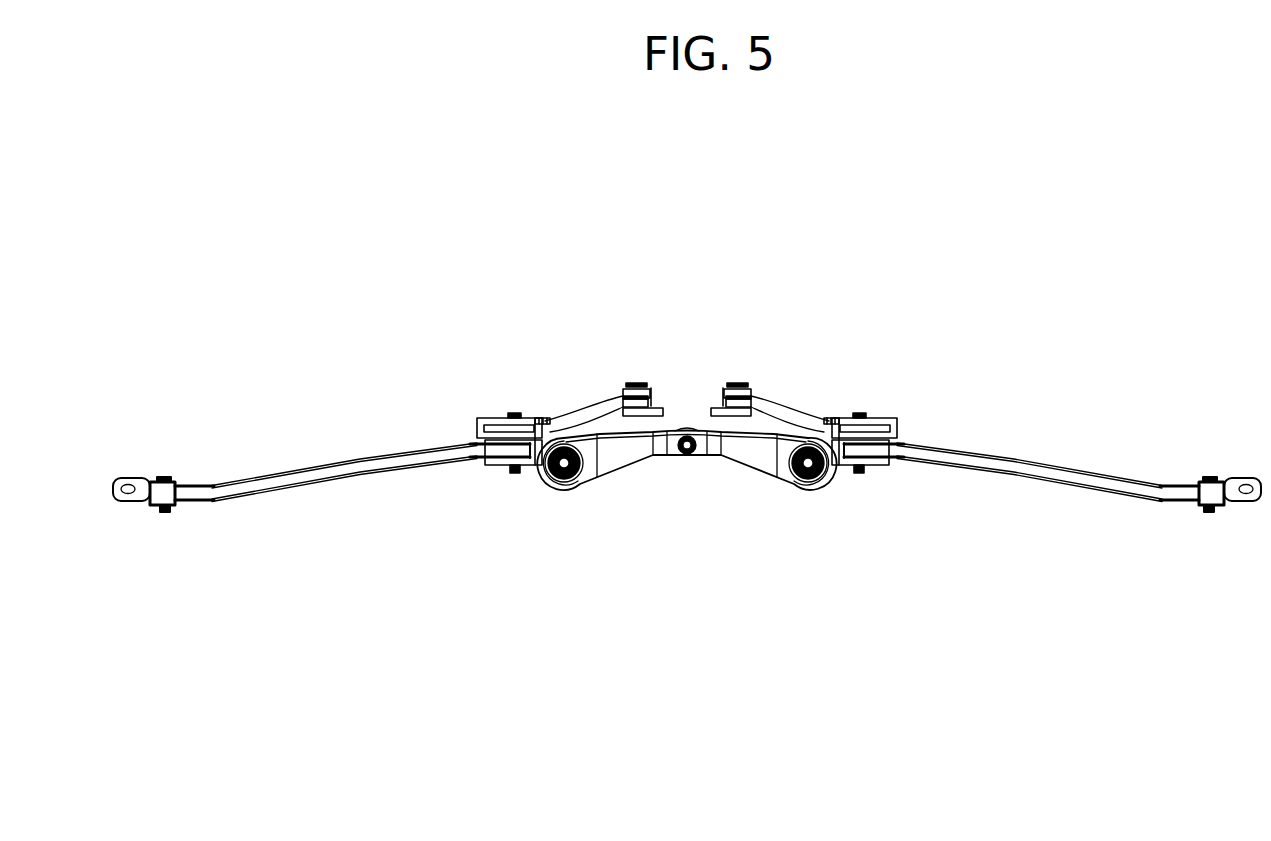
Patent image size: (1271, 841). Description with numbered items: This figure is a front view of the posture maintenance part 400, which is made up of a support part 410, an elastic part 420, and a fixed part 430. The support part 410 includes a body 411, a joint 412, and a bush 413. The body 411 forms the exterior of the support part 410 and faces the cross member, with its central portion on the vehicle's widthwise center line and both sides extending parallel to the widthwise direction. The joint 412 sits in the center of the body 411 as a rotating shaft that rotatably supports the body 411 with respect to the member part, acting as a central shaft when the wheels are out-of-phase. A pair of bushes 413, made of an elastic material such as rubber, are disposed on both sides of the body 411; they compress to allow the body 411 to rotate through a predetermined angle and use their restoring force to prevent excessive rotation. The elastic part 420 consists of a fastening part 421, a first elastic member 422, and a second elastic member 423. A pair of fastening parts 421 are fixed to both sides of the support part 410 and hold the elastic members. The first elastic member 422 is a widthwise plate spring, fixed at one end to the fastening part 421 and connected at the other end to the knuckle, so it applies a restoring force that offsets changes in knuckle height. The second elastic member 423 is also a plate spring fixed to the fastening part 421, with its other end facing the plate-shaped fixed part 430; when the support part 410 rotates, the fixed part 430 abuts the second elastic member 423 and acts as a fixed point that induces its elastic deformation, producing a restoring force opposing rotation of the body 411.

The posture maintenance part 400 is at (1172, 341).
The support part 410 is at (825, 577).
The body 411 is at (750, 453).
The joint 412 is at (684, 455).
The bush 413 is at (808, 480).
The elastic part 420 is at (1010, 372).
The fastening part 421 is at (875, 423).
The first elastic member 422 is at (968, 457).
The second elastic member 423 is at (765, 410).
The fixed part 430 is at (722, 410).